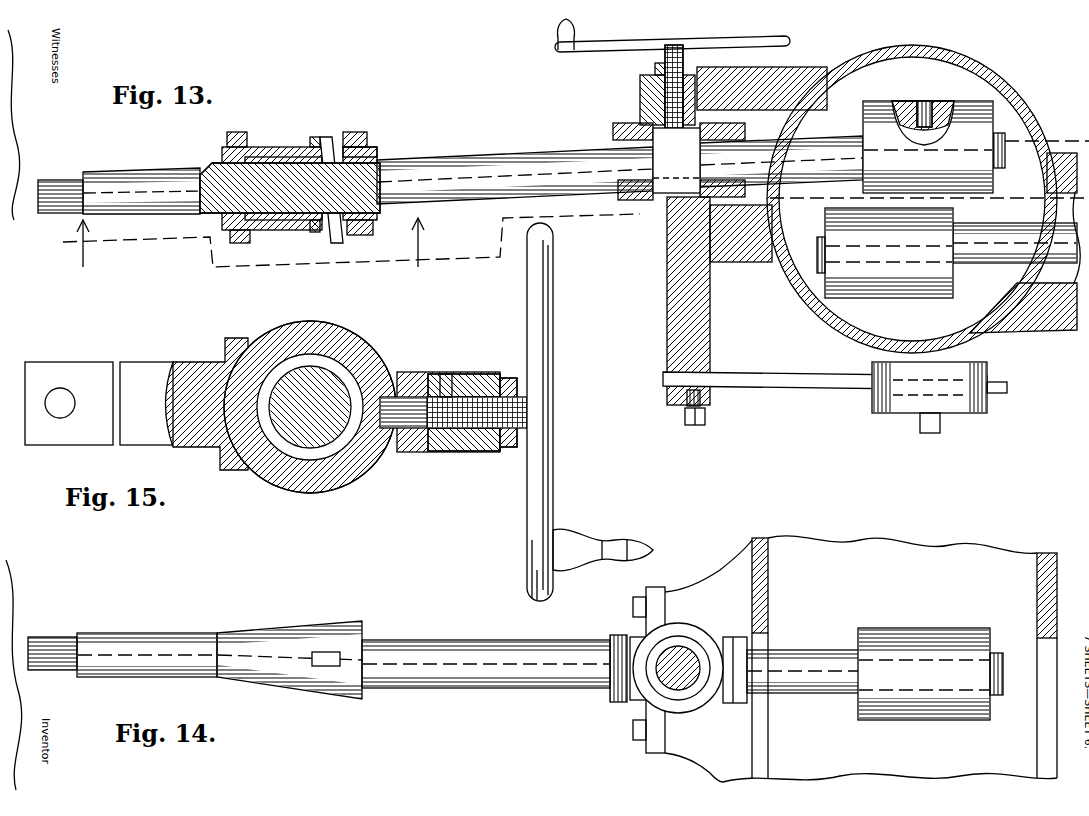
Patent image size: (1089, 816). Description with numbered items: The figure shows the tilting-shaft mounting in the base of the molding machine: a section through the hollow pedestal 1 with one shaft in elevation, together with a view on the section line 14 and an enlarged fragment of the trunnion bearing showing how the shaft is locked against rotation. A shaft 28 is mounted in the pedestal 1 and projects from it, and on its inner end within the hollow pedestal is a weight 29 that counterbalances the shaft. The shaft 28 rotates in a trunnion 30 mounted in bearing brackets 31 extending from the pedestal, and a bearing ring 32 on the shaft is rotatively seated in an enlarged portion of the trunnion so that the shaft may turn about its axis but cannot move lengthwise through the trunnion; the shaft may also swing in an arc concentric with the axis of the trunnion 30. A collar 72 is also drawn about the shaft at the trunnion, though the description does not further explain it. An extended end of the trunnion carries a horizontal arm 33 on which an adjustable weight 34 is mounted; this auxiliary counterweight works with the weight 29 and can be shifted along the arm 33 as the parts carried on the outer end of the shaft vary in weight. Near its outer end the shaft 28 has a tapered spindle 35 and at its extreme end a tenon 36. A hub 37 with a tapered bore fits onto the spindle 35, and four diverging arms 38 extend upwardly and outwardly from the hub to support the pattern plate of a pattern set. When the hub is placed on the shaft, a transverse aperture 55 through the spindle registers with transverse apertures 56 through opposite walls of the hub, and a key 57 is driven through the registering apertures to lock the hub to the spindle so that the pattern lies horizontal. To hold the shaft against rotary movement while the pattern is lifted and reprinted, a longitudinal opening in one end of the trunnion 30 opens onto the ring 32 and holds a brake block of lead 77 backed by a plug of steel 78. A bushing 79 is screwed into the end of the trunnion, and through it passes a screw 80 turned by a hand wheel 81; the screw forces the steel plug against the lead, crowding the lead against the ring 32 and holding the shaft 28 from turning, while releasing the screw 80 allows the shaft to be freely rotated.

In FIG. 13, the hollow pedestal 1 is at (1022, 100).
In FIG. 14, the hollow pedestal 1 is at (893, 567).
In FIG. 13, the supply pipe 14 is at (537, 228).
In FIG. 13, the shafts 28 is at (515, 153).
In FIG. 15, the shafts 28 is at (308, 445).
In FIG. 14, the shafts 28 is at (460, 636).
In FIG. 13, the weights 29 is at (905, 199).
In FIG. 14, the weights 29 is at (930, 674).
In FIG. 13, the trunnion 30 is at (640, 127).
In FIG. 15, the trunnion 30 is at (225, 362).
In FIG. 14, the trunnion 30 is at (690, 652).
In FIG. 13, the bearing brackets 31 is at (748, 108).
In FIG. 14, the bearing brackets 31 is at (718, 568).
In FIG. 13, the bearing ring 32 is at (712, 165).
In FIG. 15, the bearing ring 32 is at (345, 462).
In FIG. 13, the horizontal arm 33 is at (798, 388).
In FIG. 13, the adjustable weight 34 is at (908, 408).
In FIG. 13, the tapered spindle 35 is at (293, 157).
In FIG. 14, the tapered spindle 35 is at (272, 630).
In FIG. 13, the tenon 36 is at (60, 181).
In FIG. 14, the tenon 36 is at (58, 636).
In FIG. 13, the hub 37 is at (262, 147).
In FIG. 13, the diverging arms 38 is at (228, 135).
In FIG. 13, the transverse aperture 55 is at (376, 150).
In FIG. 14, the transverse aperture 55 is at (312, 659).
In FIG. 13, the transverse apertures 56 is at (316, 138).
In FIG. 13, the key 57 is at (340, 243).
In FIG. 13, the collar 72 is at (676, 160).
In FIG. 15, the brake block of lead 77 is at (402, 430).
In FIG. 13, the plug of steel 78 is at (640, 98).
In FIG. 15, the plug of steel 78 is at (440, 452).
In FIG. 13, the bushing 79 is at (678, 62).
In FIG. 15, the bushing 79 is at (503, 447).
In FIG. 13, the screw 80 is at (655, 68).
In FIG. 15, the screw 80 is at (480, 384).
In FIG. 13, the hand wheel 81 is at (583, 56).
In FIG. 15, the hand wheel 81 is at (553, 327).